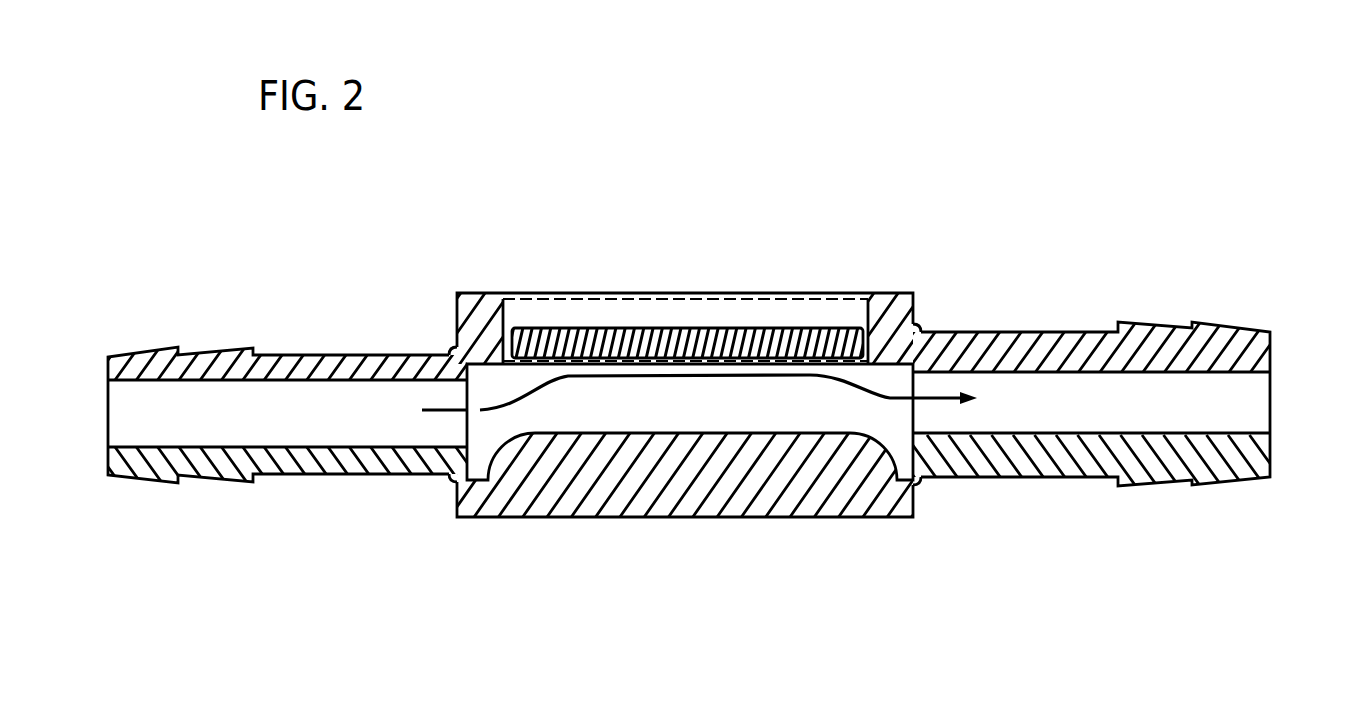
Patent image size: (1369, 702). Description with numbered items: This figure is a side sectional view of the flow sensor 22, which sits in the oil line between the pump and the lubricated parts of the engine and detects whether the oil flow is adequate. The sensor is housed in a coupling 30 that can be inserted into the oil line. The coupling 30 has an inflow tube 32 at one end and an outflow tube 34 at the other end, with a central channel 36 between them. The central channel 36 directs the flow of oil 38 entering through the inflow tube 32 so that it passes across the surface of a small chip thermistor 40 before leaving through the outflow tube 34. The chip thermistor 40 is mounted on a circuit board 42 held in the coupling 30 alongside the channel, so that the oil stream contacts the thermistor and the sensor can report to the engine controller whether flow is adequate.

The flow sensor 22 is at (979, 230).
The coupling 30 is at (261, 453).
The inflow tube 32 is at (147, 412).
The outflow tube 34 is at (1247, 393).
The central channel 36 is at (487, 427).
The flow of oil 38 is at (568, 380).
The chip thermistor 40 is at (770, 330).
The circuit board 42 is at (620, 330).